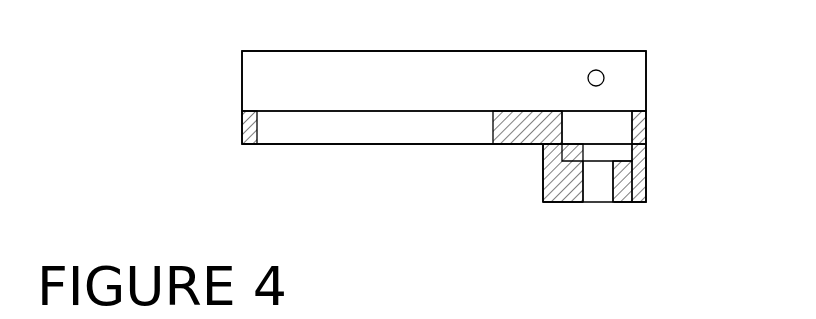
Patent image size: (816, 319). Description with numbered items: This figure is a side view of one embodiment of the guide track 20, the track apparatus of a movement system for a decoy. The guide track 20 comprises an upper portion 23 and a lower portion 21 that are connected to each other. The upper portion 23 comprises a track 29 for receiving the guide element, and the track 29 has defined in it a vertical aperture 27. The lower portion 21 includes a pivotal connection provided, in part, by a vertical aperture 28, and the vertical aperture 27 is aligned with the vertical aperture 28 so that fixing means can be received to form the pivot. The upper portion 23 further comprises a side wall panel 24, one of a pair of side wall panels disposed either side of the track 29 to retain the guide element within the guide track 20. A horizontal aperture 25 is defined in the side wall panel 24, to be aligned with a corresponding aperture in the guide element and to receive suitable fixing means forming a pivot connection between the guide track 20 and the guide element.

The guide track 20 is at (205, 168).
The lower portion 21 is at (662, 144).
The upper portion 23 is at (662, 51).
The side wall panel 24 is at (394, 92).
The horizontal aperture 25 is at (596, 70).
The vertical aperture 27 is at (587, 125).
The vertical aperture 28 is at (595, 192).
The track 29 is at (220, 111).